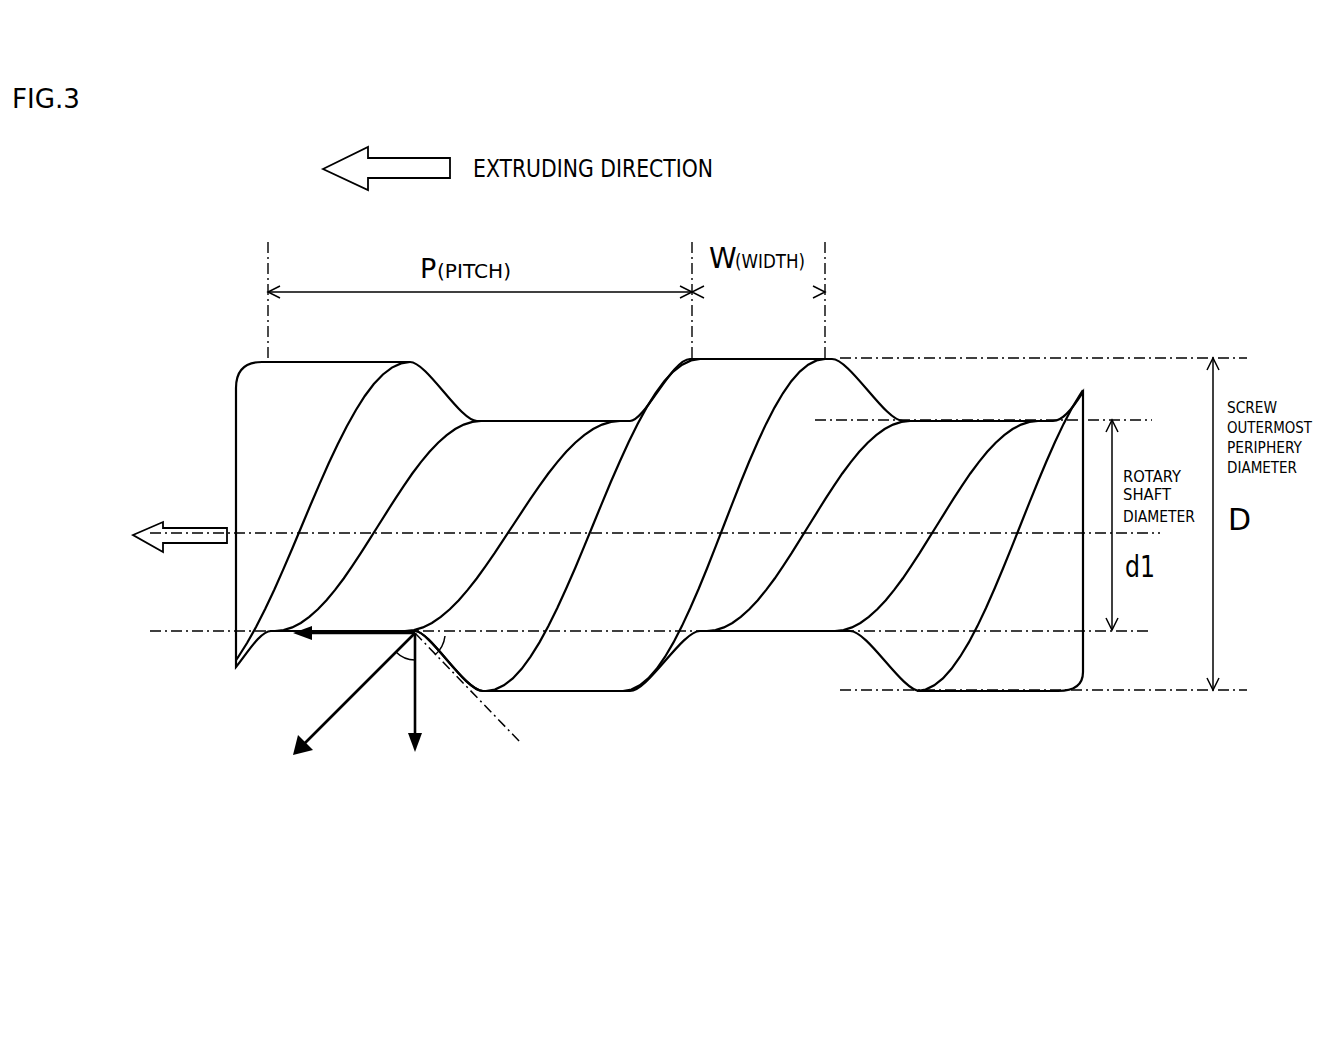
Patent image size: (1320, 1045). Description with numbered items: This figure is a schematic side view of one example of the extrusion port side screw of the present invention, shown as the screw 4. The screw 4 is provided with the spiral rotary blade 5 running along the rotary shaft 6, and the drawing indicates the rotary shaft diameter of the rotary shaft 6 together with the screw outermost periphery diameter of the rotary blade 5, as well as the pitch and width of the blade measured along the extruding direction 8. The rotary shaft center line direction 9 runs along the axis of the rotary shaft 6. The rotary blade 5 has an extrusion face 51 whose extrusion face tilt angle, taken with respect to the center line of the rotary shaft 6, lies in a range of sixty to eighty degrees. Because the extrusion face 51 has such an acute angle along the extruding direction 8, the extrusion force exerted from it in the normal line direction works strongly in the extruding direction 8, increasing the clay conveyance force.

The screw 4 is at (938, 310).
The rotary blade 5 is at (613, 628).
The rotary shaft 6 is at (778, 604).
The rotary blade extrusion face 51 is at (472, 722).
The extruding direction 8 is at (386, 149).
The rotary shaft center line direction 9 is at (180, 522).